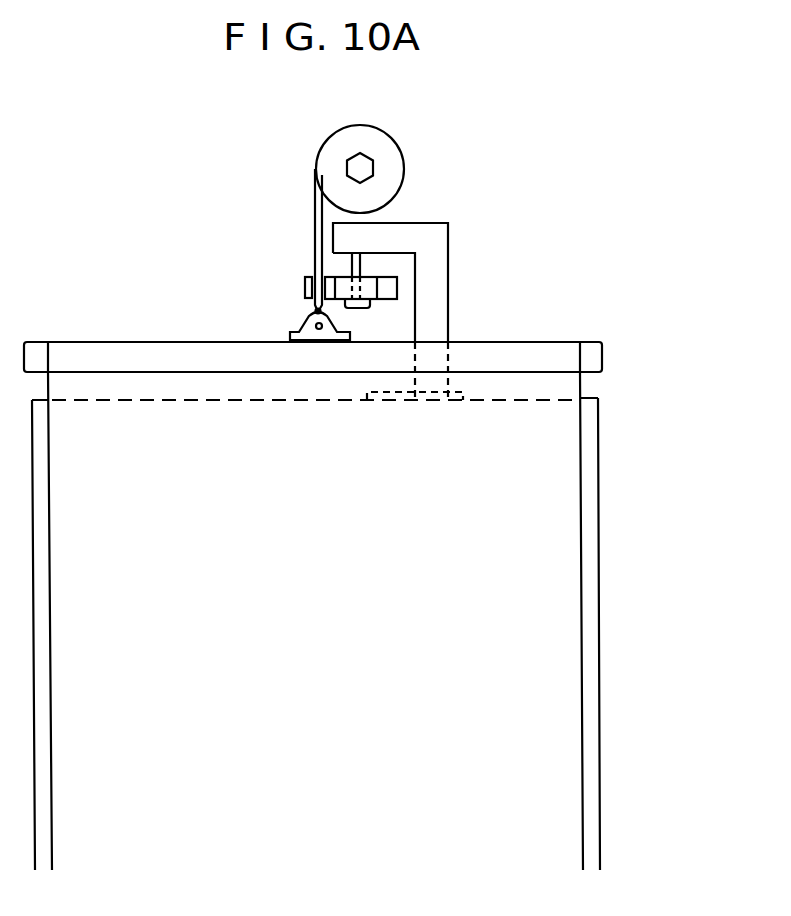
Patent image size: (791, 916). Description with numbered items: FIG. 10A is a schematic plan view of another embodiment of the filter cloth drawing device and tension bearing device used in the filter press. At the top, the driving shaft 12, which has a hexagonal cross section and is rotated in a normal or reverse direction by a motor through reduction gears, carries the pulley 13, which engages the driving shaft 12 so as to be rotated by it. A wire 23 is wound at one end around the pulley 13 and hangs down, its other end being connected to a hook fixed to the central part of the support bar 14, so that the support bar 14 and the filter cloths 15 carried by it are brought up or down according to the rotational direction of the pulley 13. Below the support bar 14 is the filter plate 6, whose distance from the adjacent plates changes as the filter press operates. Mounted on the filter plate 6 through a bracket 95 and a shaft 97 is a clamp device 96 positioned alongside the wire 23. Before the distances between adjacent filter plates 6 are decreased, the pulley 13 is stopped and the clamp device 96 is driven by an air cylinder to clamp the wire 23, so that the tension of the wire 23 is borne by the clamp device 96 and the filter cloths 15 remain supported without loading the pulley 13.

The filter plate 6 is at (595, 487).
The support bar 14 is at (602, 353).
The filter cloth 15 is at (558, 388).
The clamp device 95 is at (437, 325).
The shaft 97 is at (360, 263).
The switch 96 is at (398, 292).
The pulley 13 is at (398, 168).
The driving shaft 12 is at (370, 158).
The wire 23 is at (315, 202).